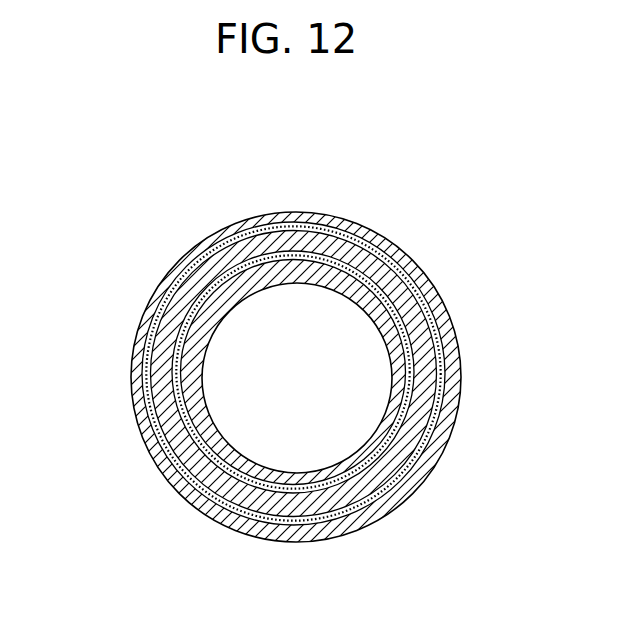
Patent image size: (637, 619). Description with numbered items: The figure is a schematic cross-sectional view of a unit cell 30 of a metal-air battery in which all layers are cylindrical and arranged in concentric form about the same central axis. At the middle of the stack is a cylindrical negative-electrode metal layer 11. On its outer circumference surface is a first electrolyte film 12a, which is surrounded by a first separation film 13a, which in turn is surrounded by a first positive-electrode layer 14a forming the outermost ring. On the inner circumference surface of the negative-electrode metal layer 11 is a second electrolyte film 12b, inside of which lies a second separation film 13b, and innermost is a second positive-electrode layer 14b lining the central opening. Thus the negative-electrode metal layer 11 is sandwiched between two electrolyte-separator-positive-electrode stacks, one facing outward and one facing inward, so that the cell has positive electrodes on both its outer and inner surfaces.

The unit cell 30 is at (160, 230).
The negative-electrode metal layer 11 is at (438, 298).
The first electrolyte film 12a is at (422, 268).
The first separation film 13a is at (397, 242).
The first positive-electrode layer 14a is at (357, 223).
The second positive-electrode layer 14b is at (200, 375).
The second separation film 13b is at (200, 398).
The second electrolyte film 12b is at (205, 429).